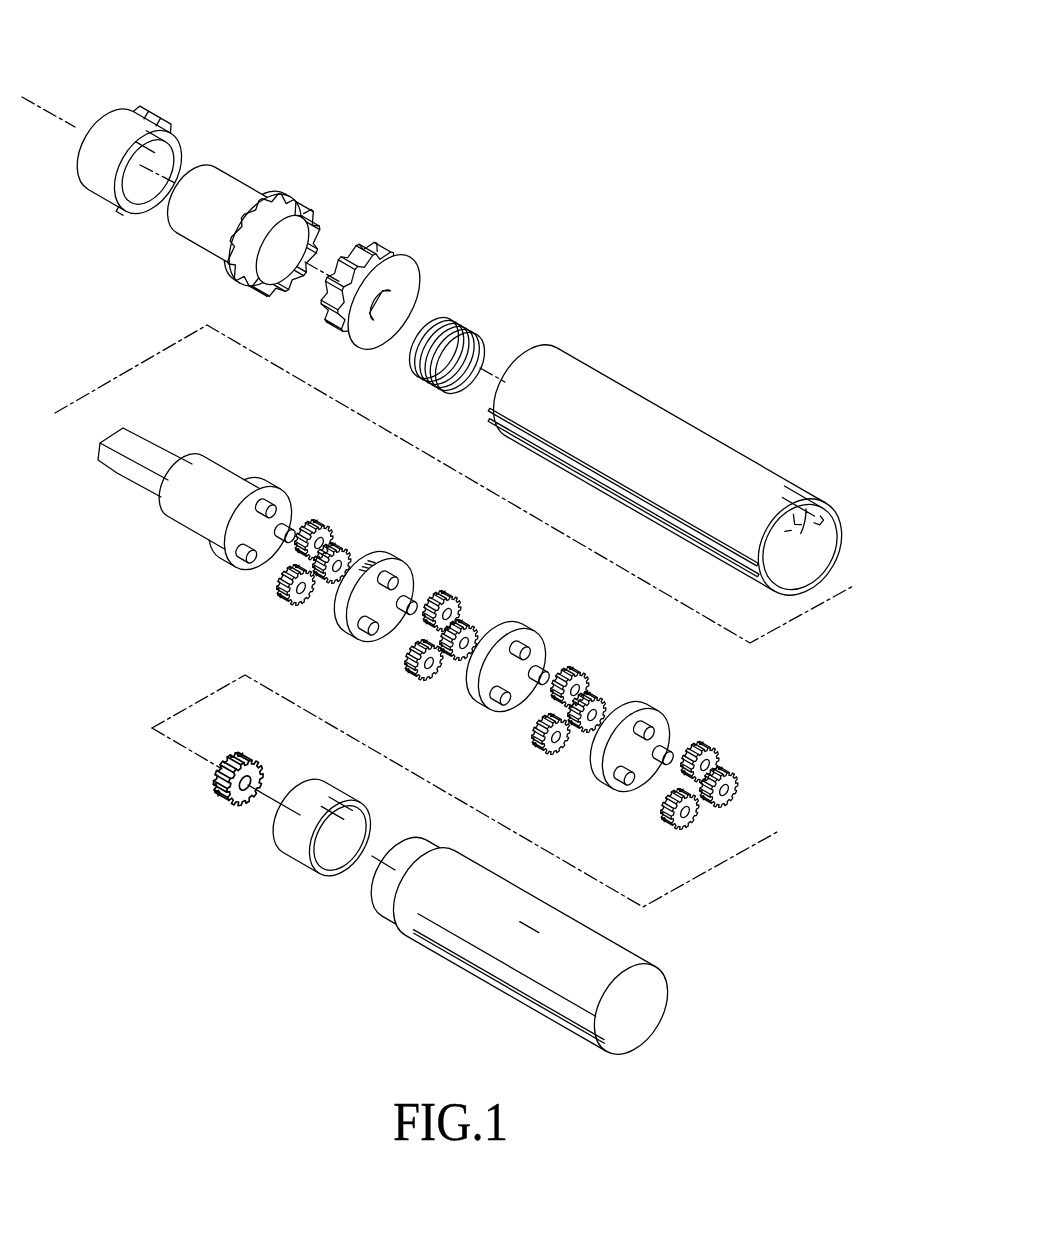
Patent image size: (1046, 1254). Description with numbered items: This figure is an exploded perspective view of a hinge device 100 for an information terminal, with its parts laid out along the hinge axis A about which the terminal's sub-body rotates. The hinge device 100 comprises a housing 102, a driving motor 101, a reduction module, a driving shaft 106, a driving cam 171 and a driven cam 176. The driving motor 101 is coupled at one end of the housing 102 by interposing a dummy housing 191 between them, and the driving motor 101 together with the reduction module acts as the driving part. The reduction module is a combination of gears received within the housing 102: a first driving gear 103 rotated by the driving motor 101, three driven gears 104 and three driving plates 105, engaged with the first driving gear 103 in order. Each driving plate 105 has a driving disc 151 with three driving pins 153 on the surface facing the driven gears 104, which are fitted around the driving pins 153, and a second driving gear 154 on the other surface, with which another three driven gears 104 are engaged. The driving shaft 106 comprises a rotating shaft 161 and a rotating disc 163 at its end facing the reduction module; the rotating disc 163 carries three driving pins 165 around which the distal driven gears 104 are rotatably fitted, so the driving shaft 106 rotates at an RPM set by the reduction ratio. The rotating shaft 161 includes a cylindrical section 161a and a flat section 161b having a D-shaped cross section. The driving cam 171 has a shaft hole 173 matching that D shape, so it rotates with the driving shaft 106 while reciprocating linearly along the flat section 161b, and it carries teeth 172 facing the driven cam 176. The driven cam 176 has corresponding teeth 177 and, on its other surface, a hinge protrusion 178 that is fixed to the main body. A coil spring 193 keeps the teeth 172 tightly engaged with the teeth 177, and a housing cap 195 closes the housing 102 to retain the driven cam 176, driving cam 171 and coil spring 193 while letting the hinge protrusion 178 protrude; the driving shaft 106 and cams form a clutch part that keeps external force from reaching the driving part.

The hinge device 100 is at (636, 82).
The hinge axis A is at (68, 118).
The driving motor 101 is at (482, 994).
The housing 102 is at (688, 412).
The first driving gear 103 is at (214, 806).
The driven gears 104 is at (342, 537).
The driving plates 105 is at (410, 560).
The driving shaft 106 is at (164, 539).
The driving disc 151 is at (350, 622).
The driving pins 153 is at (371, 646).
The second driving gear 154 is at (347, 590).
The rotating shaft 161 is at (268, 414).
The cylindrical section 161a is at (198, 468).
The flat section 161b is at (136, 438).
The rotating disc 163 is at (220, 551).
The driving pins 165 is at (270, 508).
The driving cam 171 is at (420, 248).
The teeth 172 is at (362, 262).
The shaft hole 173 is at (393, 312).
The driven cam 176 is at (262, 170).
The teeth 177 is at (296, 214).
The hinge protrusion 178 is at (214, 172).
The dummy housing 191 is at (288, 874).
The coil spring 193 is at (484, 322).
The housing cap 195 is at (152, 112).